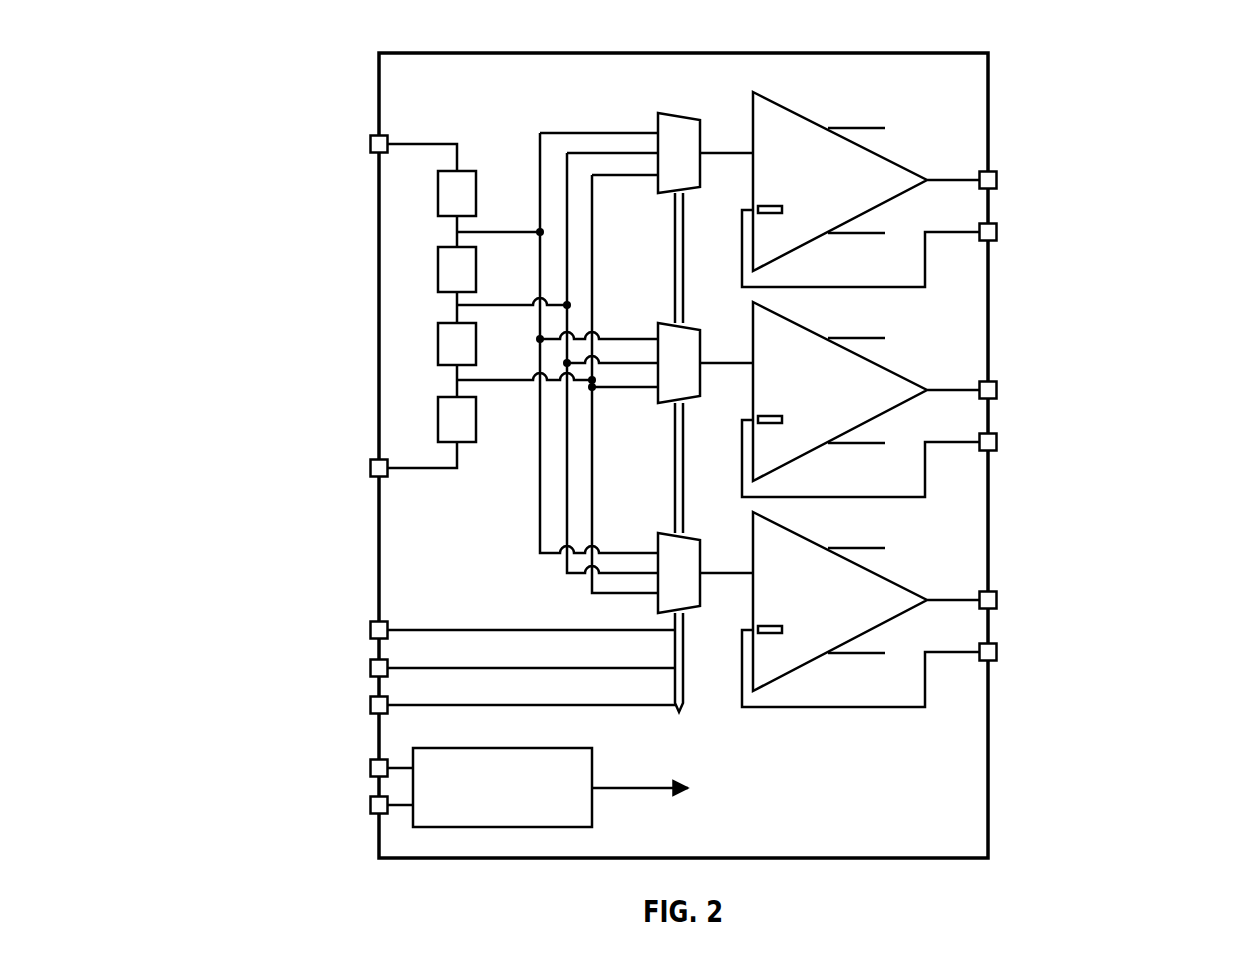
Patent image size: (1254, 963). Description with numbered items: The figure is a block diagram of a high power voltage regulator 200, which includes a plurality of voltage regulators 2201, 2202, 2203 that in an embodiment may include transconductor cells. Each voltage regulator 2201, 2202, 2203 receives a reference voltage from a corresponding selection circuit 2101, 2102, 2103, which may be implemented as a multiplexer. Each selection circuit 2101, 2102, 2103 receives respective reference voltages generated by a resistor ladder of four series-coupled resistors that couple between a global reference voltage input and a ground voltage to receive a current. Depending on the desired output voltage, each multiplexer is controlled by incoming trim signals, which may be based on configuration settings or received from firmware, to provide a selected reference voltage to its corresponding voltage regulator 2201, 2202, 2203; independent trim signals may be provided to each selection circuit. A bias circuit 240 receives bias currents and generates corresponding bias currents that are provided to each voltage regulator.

The voltage regulator 200 is at (962, 41).
The selection circuit 2101 is at (657, 120).
The selection circuit 2102 is at (657, 399).
The selection circuit 2103 is at (657, 537).
The voltage regulator 2201 is at (873, 151).
The voltage regulator 2202 is at (873, 361).
The voltage regulator 2203 is at (873, 571).
The bias circuit 240 is at (575, 748).